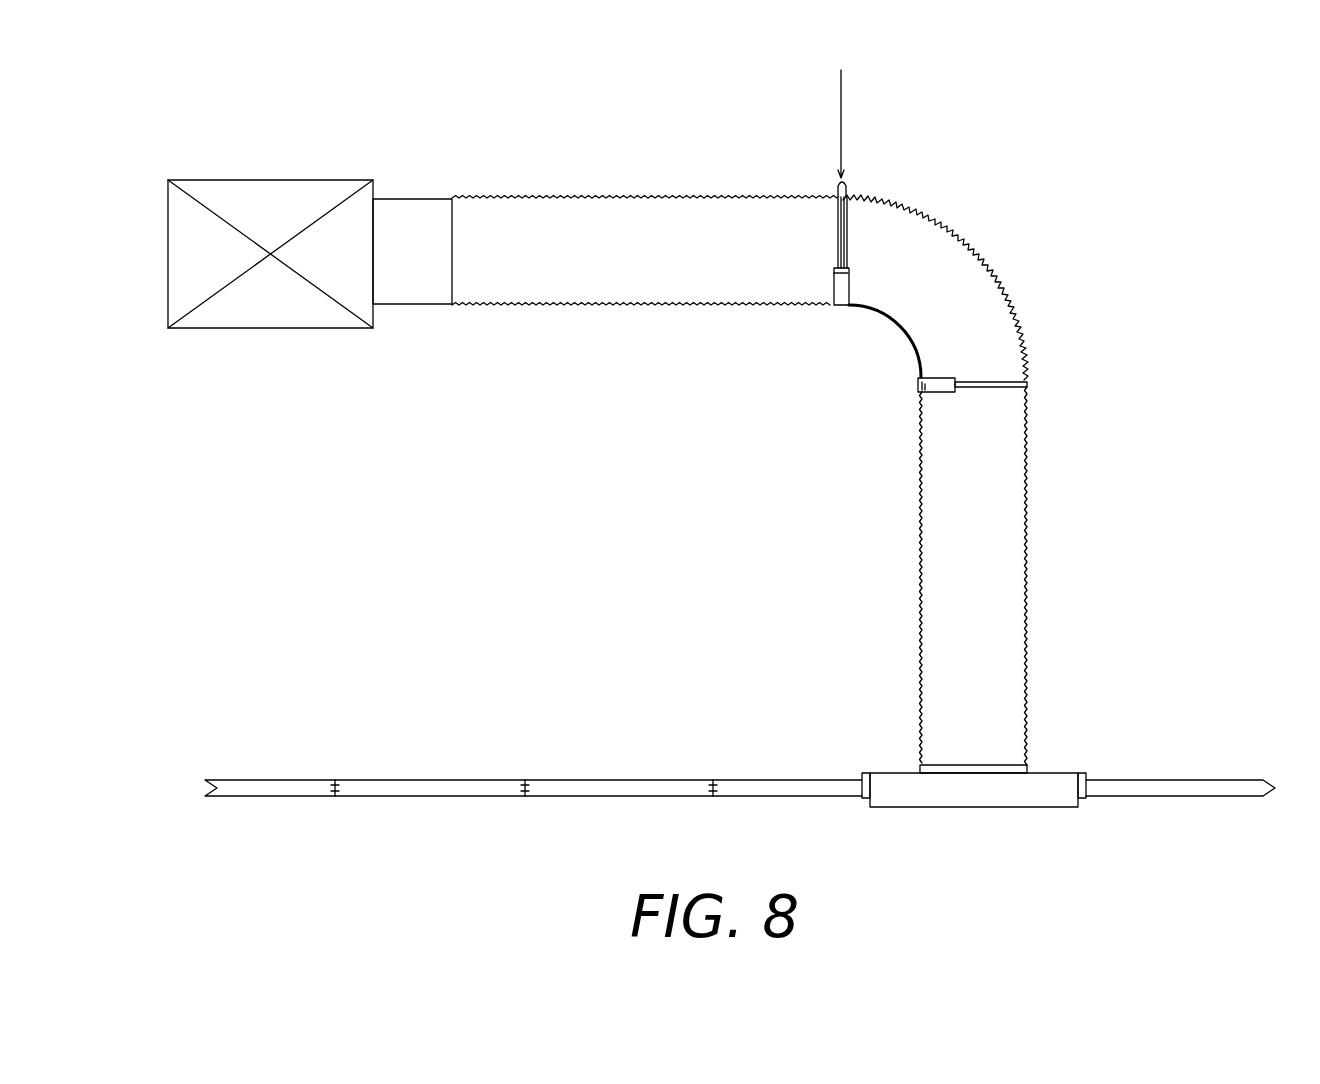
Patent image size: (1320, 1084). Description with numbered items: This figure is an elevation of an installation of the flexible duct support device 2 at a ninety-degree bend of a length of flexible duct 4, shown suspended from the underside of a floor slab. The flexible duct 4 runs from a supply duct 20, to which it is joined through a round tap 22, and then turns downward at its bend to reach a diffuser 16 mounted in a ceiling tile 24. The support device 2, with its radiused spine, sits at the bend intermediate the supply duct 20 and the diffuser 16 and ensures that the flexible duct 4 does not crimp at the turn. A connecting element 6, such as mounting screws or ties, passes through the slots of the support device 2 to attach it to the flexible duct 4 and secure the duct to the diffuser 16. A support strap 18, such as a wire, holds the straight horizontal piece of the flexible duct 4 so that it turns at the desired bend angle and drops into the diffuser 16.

The structural support device 2 is at (892, 332).
The flexible duct 4 is at (560, 263).
The connecting element 6 is at (1007, 382).
The diffuser 16 is at (1078, 807).
The support strap 18 is at (841, 120).
The supply duct 20 is at (168, 180).
The round tap 22 is at (413, 198).
The ceiling tile 24 is at (205, 789).